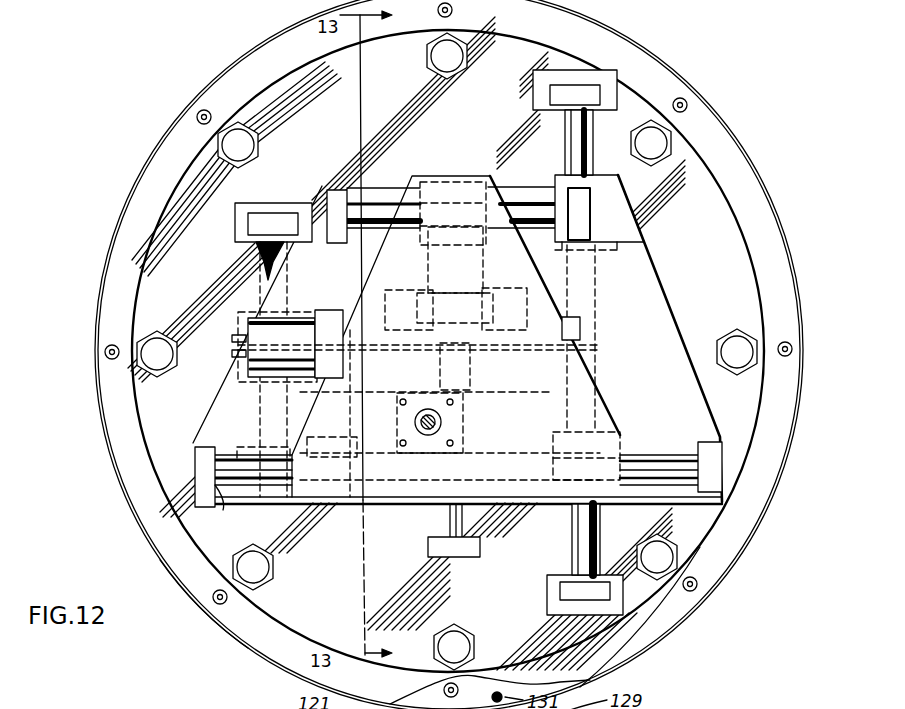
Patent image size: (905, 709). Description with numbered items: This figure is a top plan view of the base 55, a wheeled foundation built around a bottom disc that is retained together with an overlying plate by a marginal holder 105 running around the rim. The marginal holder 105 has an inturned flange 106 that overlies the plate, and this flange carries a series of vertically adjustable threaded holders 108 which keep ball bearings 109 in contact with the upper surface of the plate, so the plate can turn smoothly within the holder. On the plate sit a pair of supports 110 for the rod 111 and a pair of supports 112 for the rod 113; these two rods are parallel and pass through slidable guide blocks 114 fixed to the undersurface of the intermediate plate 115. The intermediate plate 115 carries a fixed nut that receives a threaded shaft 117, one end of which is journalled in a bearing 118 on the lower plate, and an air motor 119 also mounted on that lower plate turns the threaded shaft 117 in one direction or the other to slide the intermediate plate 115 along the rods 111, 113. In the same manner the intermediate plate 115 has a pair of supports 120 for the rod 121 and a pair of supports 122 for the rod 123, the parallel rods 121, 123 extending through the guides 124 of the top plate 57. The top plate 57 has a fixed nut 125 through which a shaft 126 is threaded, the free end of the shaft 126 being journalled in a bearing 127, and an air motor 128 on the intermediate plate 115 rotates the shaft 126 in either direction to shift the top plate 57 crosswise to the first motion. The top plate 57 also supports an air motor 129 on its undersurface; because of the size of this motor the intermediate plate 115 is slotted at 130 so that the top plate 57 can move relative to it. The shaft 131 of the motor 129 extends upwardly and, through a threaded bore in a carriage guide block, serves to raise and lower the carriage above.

The base 55 is at (766, 536).
The top plate 57 is at (608, 418).
The marginal holder 105 is at (736, 562).
The inturned flange 106 is at (193, 570).
The threaded holders 108 is at (212, 600).
The ball bearings 109 is at (293, 607).
The supports 110 is at (263, 203).
The rod 111 is at (262, 257).
The supports 112 is at (587, 90).
The rod 113 is at (593, 130).
The slidable guide blocks 114 is at (235, 325).
The intermediate plate 115 is at (667, 312).
The threaded shaft 117 is at (450, 520).
The bearing 118 is at (476, 557).
The air motor 119 is at (463, 288).
The supports 120 is at (342, 193).
The rod 121 is at (395, 188).
The supports 122 is at (193, 487).
The rod 123 is at (213, 503).
The guides 124 is at (496, 178).
The fixed nut 125 is at (503, 310).
The shaft 126 is at (540, 347).
The bearing 127 is at (580, 322).
The air motor 128 is at (247, 380).
The air motor 129 is at (392, 417).
The slot 130 is at (553, 403).
The shaft 131 is at (441, 425).